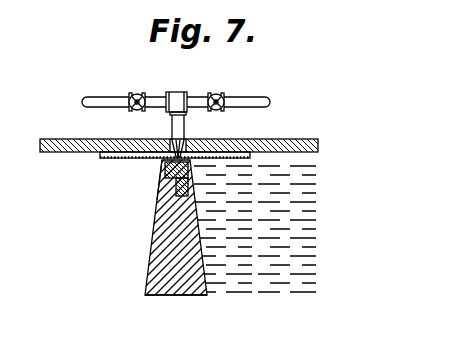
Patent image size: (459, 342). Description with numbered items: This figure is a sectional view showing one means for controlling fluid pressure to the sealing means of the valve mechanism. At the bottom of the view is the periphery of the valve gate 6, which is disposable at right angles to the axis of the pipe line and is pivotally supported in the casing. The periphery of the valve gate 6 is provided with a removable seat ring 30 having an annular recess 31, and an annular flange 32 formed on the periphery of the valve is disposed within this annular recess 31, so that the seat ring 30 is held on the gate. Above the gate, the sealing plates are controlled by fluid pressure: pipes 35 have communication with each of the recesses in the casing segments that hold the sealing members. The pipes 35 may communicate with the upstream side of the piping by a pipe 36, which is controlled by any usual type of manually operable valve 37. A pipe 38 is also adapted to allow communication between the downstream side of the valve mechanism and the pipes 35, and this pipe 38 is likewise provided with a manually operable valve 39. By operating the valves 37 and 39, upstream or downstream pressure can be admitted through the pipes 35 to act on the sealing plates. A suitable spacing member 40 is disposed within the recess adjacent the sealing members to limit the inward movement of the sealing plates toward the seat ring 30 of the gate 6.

The pipe 38 is at (96, 101).
The manually operable valve 39 is at (130, 109).
The manually operable valve 37 is at (218, 97).
The pipe 36 is at (256, 102).
The pipes 35 is at (180, 130).
The spacing member 40 is at (199, 152).
The removable seat ring 30 is at (165, 168).
The annular flange 32 is at (160, 184).
The annular recess 31 is at (158, 203).
The valve gate 6 is at (152, 284).